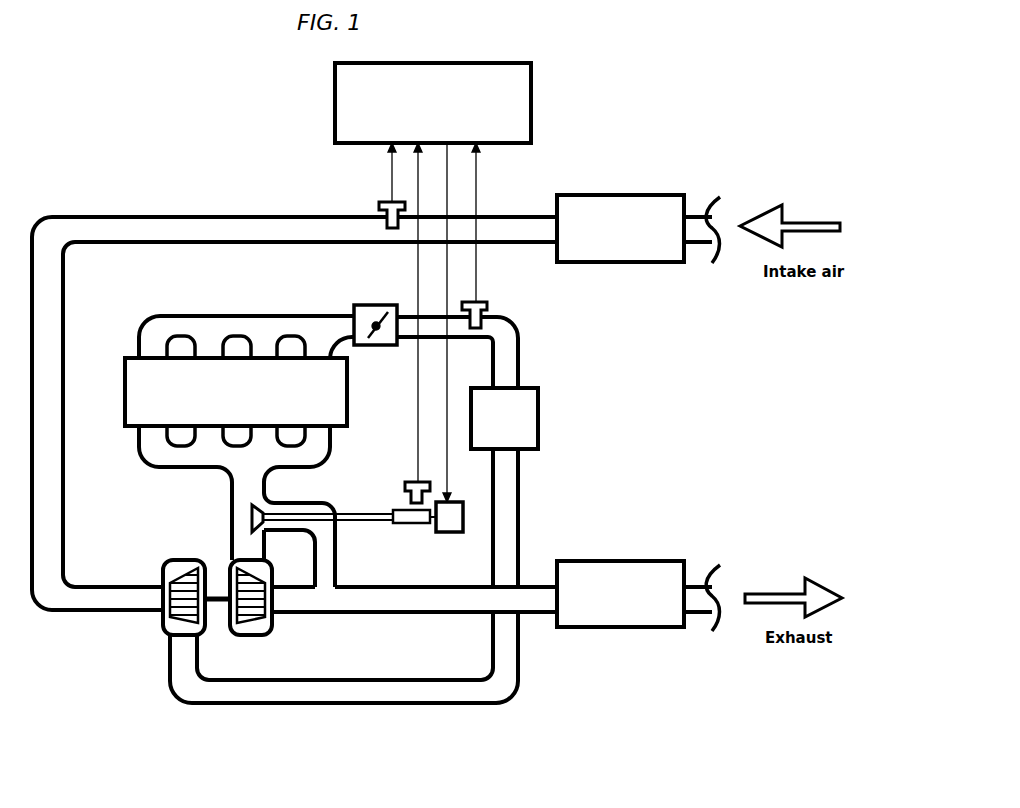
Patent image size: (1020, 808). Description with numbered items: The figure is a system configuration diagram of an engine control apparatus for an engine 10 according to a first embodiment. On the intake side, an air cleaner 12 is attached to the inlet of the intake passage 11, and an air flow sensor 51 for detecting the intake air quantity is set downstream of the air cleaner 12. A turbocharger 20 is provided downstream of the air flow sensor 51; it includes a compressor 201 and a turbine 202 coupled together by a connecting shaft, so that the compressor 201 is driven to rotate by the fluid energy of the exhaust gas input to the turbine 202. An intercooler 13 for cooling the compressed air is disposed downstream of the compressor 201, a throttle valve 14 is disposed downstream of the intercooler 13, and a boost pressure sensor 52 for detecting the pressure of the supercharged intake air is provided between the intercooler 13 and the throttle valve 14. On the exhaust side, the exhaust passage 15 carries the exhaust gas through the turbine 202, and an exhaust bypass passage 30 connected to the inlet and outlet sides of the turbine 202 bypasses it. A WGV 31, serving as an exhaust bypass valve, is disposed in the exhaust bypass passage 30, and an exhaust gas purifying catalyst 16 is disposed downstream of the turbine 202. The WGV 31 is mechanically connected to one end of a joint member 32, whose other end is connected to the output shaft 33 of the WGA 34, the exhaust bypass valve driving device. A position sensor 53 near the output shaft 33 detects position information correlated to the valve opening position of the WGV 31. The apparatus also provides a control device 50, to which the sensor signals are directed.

The engine 10 is at (125, 410).
The intake passage 11 is at (292, 217).
The air cleaner 12 is at (598, 196).
The intercooler 13 is at (538, 425).
The throttle valve 14 is at (367, 306).
The exhaust passage 15 is at (398, 613).
The exhaust gas purifying catalyst 16 is at (598, 562).
The turbocharger 20 is at (172, 632).
The compressor 201 is at (165, 635).
The turbine 202 is at (248, 637).
The exhaust bypass passage 30 is at (335, 575).
The WGV 31 is at (252, 515).
The joint member 32 is at (355, 514).
The output shaft 33 is at (415, 526).
The WGA 34 is at (452, 533).
The control device 50 is at (335, 105).
The air flow sensor 51 is at (379, 204).
The boost pressure sensor 52 is at (487, 304).
The position sensor 53 is at (405, 485).